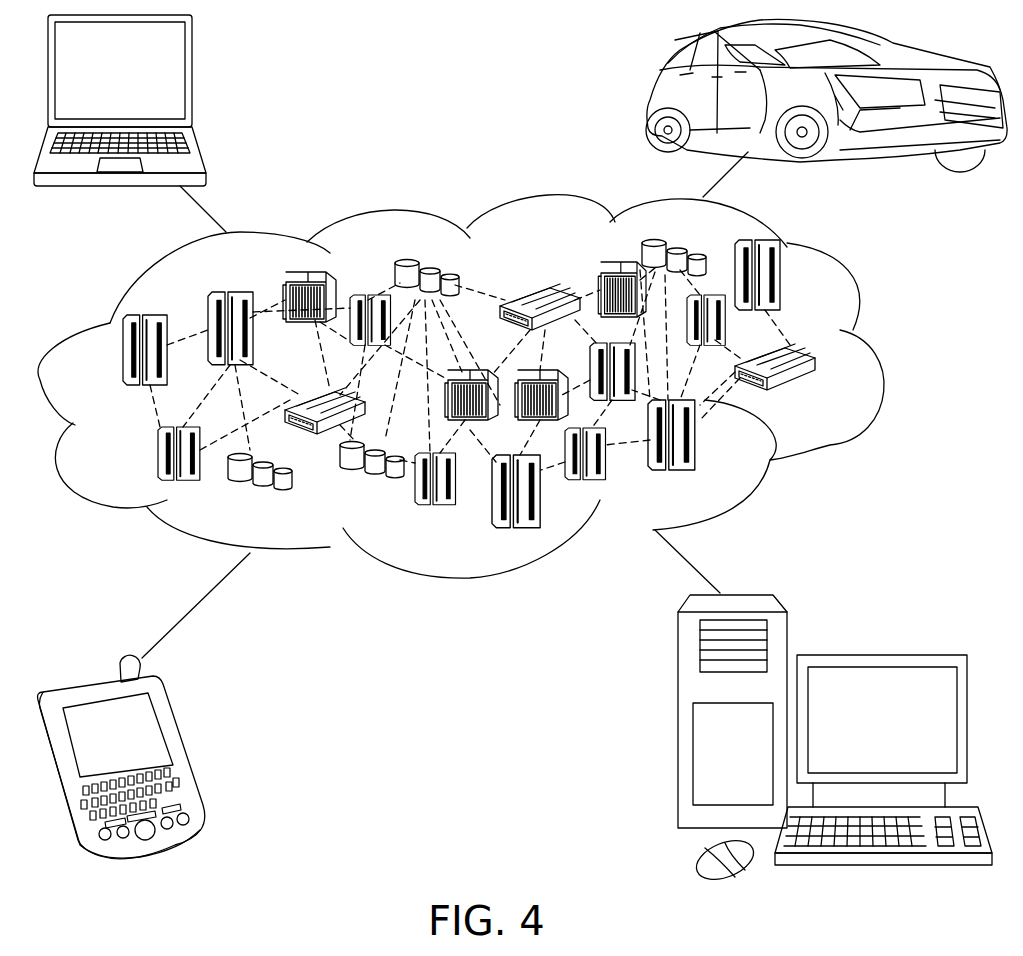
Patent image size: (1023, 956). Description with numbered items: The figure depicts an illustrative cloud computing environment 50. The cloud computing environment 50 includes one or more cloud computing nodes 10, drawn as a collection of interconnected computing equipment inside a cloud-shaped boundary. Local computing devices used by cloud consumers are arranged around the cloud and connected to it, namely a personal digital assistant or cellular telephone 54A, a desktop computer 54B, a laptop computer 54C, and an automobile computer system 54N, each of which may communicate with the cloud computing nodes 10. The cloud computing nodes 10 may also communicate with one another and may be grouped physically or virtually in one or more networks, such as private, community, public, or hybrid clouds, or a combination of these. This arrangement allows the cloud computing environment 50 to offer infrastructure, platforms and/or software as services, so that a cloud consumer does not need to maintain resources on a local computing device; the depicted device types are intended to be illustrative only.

The laptop computer 54C is at (195, 82).
The automobile computer system 54N is at (655, 97).
The cloud computing environment 50 is at (877, 362).
The cloud computing node 10 is at (820, 392).
The personal digital assistant or cellular telephone 54A is at (185, 750).
The desktop computer 54B is at (882, 655).